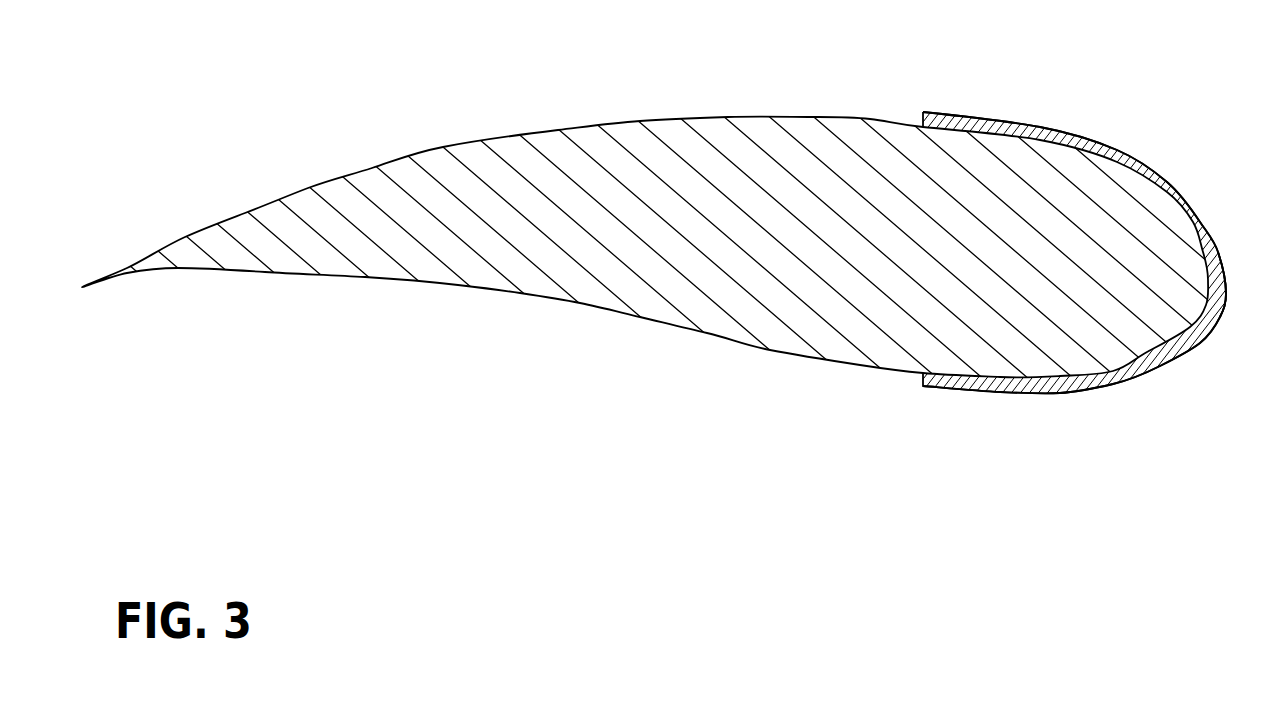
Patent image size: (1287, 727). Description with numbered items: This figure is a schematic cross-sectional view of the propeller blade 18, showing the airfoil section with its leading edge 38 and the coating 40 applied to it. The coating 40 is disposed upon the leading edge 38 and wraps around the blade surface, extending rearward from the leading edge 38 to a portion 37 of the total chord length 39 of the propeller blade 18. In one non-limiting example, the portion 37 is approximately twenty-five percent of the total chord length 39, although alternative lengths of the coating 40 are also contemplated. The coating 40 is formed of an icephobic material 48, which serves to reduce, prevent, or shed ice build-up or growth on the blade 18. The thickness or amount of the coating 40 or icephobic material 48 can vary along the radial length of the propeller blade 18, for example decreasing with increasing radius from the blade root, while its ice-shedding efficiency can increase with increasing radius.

The propeller blade 18 is at (832, 303).
The portion of the total chord length 37 is at (1235, 493).
The leading edge 38 is at (1228, 297).
The total chord length 39 is at (98, 88).
The coating 40 is at (1060, 393).
The icephobic material 48 is at (1178, 367).